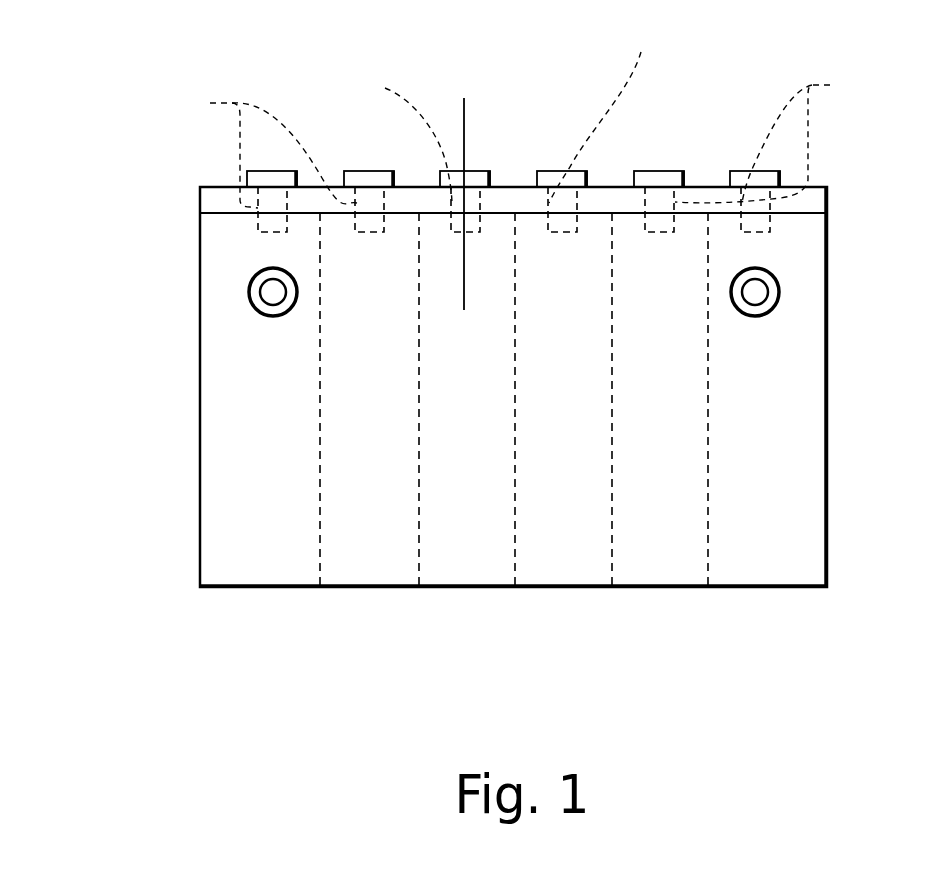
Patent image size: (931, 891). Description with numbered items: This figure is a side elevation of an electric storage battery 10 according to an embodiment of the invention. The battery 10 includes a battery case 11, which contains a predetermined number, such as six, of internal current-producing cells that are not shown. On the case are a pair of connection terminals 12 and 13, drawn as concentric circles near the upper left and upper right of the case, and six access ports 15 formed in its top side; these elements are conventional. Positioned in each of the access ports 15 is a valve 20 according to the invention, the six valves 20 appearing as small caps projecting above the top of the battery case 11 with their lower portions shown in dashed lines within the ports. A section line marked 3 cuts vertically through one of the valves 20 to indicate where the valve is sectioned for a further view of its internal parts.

The electric storage battery 10 is at (480, 305).
The battery case 11 is at (237, 412).
The connection terminal 12 is at (755, 292).
The connection terminal 13 is at (273, 292).
The access port 15 is at (521, 115).
The valve 20 is at (433, 165).
The section line 3- 3 is at (427, 107).